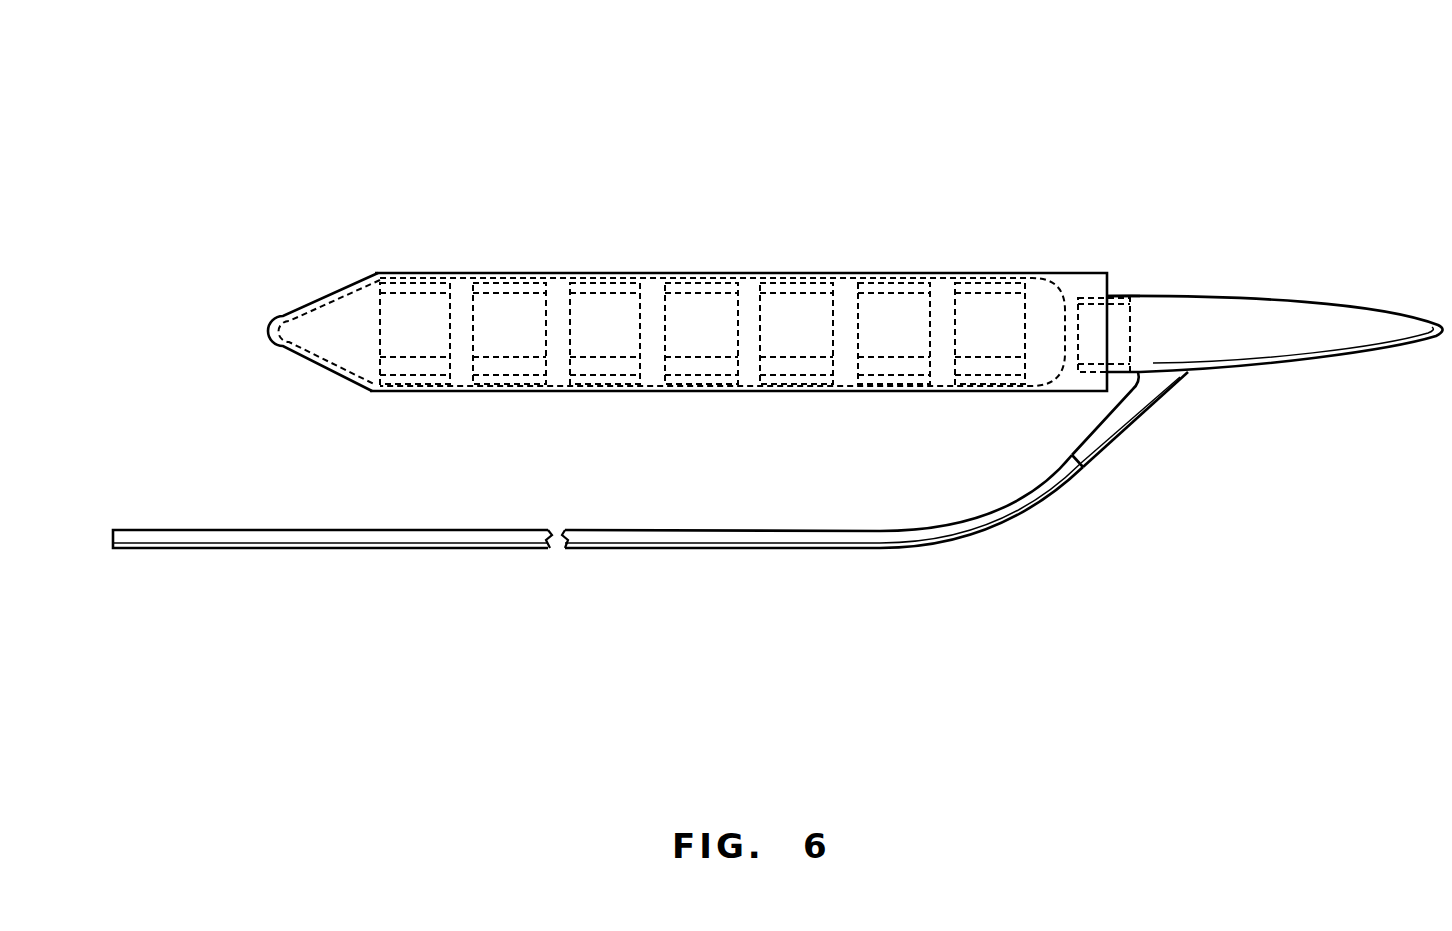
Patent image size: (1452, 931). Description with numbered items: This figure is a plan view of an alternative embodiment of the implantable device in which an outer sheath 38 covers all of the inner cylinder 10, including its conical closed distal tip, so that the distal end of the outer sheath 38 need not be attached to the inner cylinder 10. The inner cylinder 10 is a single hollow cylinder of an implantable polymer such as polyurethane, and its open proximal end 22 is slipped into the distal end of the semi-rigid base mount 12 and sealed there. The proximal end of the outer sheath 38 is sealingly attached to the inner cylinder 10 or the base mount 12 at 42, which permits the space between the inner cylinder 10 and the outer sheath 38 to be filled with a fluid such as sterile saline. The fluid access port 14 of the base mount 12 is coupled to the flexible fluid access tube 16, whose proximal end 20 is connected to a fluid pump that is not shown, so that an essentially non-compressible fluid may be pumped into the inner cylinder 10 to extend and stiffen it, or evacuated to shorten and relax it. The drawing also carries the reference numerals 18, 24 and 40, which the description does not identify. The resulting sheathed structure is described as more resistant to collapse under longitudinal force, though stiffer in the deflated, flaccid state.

The inner cylinder 10 is at (296, 128).
The base mount 12 is at (1305, 322).
The fluid access port 14 is at (1143, 400).
The flexible fluid access tube 16 is at (960, 536).
The joint 18 is at (1083, 468).
The proximal end 20 is at (113, 545).
The proximal end 22 is at (1120, 298).
The connector 24 is at (1075, 300).
The outer sheath 38 is at (652, 280).
The nose cap 40 is at (318, 295).
The sealing attachment 42 is at (1097, 282).